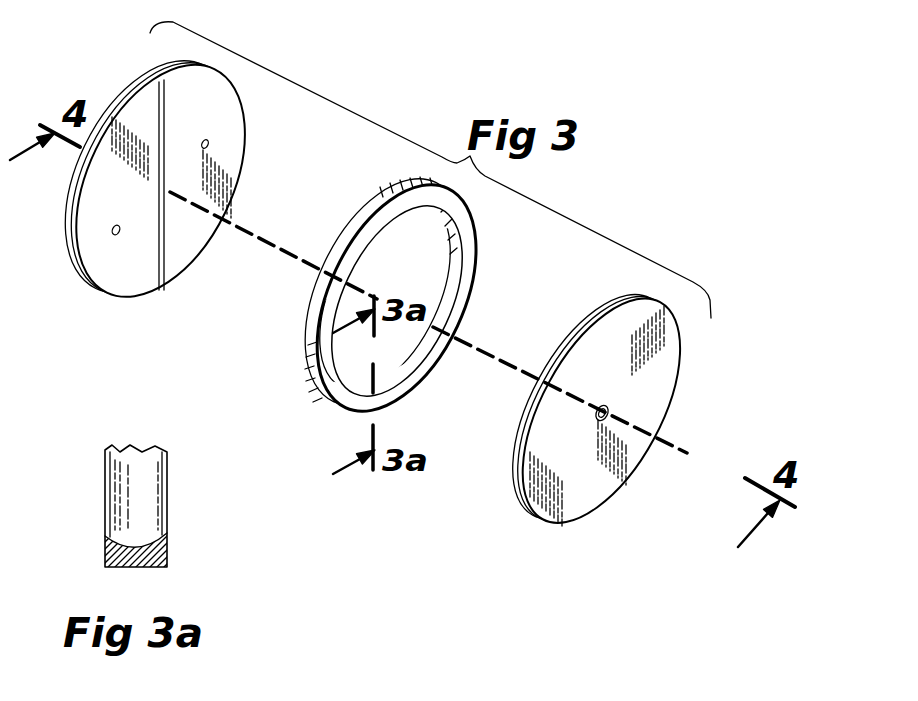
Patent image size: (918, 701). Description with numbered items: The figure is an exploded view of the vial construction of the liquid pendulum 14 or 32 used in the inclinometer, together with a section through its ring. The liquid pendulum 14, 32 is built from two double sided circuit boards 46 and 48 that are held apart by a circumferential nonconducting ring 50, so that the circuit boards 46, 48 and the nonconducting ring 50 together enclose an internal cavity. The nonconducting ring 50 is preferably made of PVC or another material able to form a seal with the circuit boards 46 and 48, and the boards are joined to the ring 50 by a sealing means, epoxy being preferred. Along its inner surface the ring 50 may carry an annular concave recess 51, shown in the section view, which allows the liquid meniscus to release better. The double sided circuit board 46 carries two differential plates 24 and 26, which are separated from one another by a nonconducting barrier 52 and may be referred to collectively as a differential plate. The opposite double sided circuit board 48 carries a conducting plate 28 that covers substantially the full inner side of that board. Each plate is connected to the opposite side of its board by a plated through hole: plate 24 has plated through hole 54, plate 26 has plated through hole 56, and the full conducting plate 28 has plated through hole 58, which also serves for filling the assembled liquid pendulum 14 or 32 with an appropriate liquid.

In FIG. 3, the liquid pendulum 14 is at (450, 145).
In FIG. 3, the liquid pendulum 32 is at (455, 150).
In FIG. 3, the differential plate 24 is at (132, 277).
In FIG. 3, the differential plate 26 is at (191, 223).
In FIG. 3, the conducting plate 28 is at (515, 478).
In FIG. 3, the double sided circuit board 46 is at (140, 76).
In FIG. 3, the double sided circuit board 48 is at (625, 498).
In FIG. 3, the nonconducting ring 50 is at (482, 277).
In FIG. 3A, the nonconducting ring 50 is at (185, 480).
In FIG. 3, the annular concave recess 51 is at (415, 355).
In FIG. 3A, the annular concave recess 51 is at (142, 545).
In FIG. 3, the nonconducting barrier 52 is at (165, 262).
In FIG. 3, the plated through hole 54 is at (112, 231).
In FIG. 3, the plated through hole 56 is at (209, 143).
In FIG. 3, the plated through hole 58 is at (610, 412).